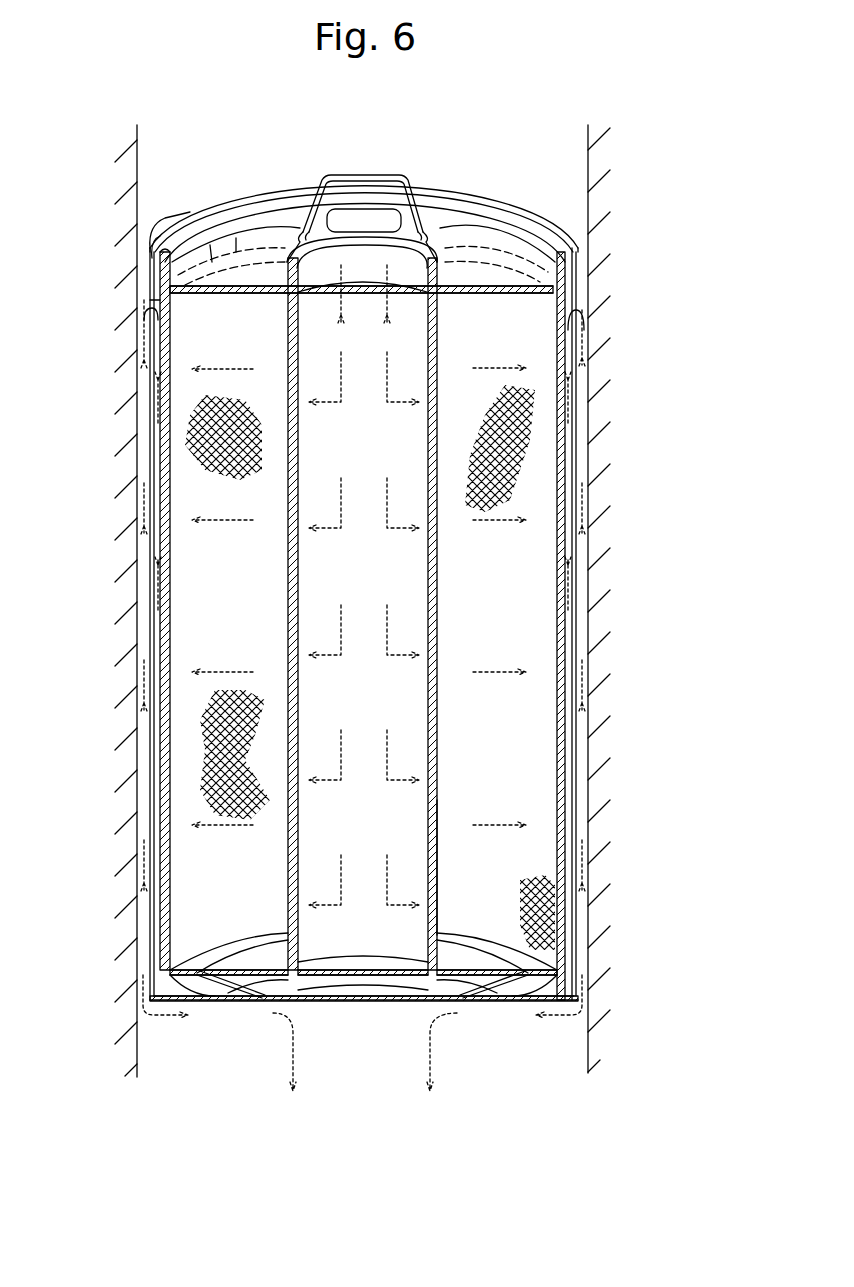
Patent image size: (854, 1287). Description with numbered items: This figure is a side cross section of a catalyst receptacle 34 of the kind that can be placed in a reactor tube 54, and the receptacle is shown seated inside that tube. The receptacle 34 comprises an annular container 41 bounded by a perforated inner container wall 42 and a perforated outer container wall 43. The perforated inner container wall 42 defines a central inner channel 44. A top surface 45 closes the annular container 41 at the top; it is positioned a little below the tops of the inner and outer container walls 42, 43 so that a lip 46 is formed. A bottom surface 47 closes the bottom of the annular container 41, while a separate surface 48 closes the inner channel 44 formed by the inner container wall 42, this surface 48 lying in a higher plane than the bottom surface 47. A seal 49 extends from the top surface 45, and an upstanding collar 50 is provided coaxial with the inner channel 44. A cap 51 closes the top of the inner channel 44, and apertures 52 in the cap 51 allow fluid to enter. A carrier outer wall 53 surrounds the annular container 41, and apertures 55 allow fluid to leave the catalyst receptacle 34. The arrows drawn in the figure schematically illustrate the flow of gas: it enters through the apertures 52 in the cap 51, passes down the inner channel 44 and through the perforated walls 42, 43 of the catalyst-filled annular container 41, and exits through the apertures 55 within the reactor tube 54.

The catalyst receptacle 34 is at (652, 396).
The annular container 41 is at (515, 448).
The inner container wall 42 is at (293, 396).
The outer container wall 43 is at (165, 470).
The inner channel 44 is at (437, 858).
The top surface 45 is at (245, 255).
The lip 46 is at (520, 234).
The bottom surface 47 is at (240, 975).
The surface closing the inner channel 48 is at (368, 975).
The seal 49 is at (170, 215).
The upstanding collar 50 is at (440, 262).
The cap 51 is at (365, 178).
The apertures in the cap 52 is at (305, 228).
The carrier outer wall 53 is at (588, 626).
The reactor tube 54 is at (598, 276).
The apertures 55 is at (150, 300).